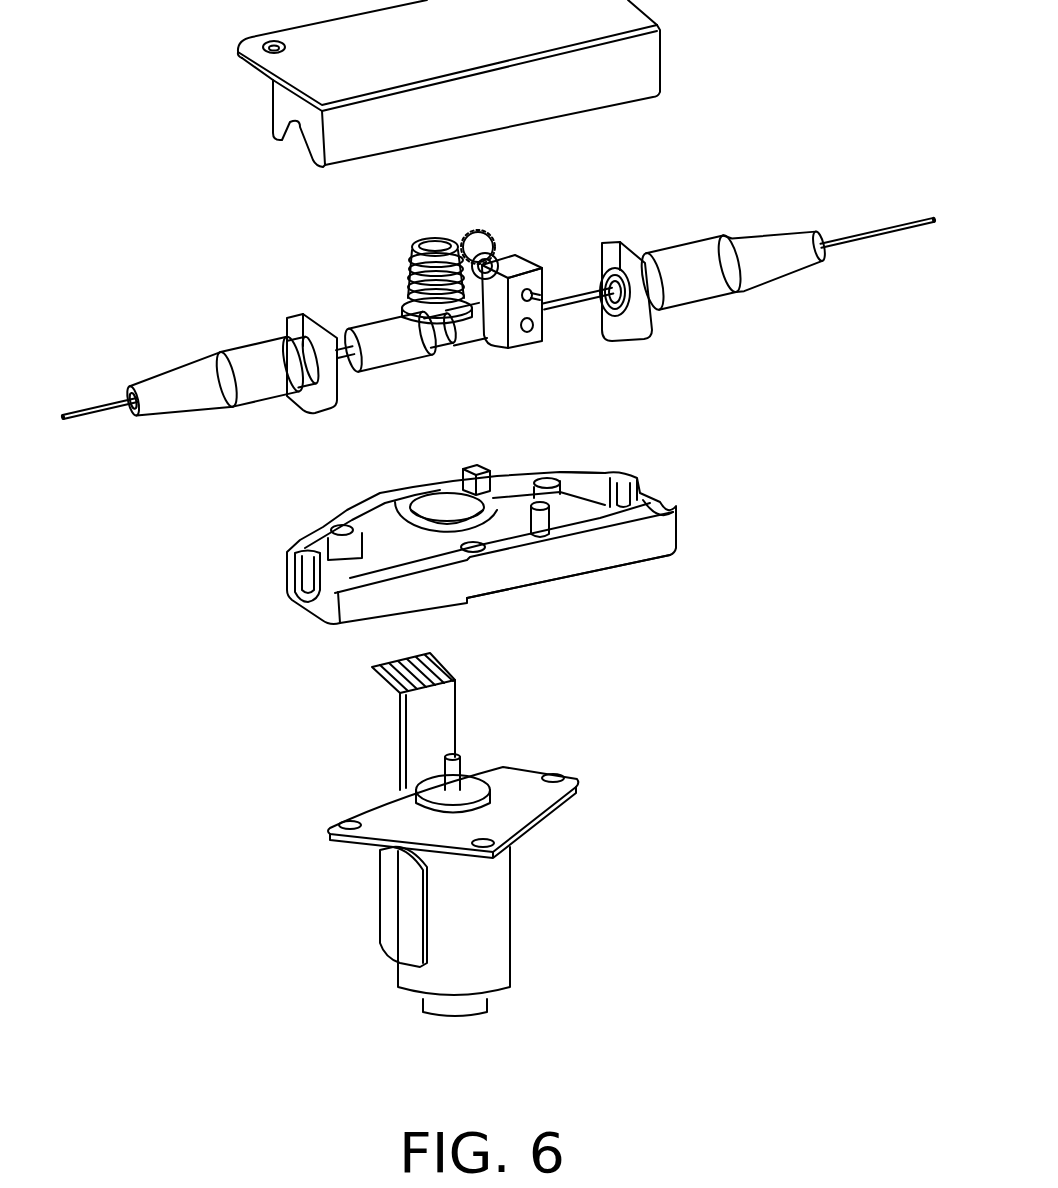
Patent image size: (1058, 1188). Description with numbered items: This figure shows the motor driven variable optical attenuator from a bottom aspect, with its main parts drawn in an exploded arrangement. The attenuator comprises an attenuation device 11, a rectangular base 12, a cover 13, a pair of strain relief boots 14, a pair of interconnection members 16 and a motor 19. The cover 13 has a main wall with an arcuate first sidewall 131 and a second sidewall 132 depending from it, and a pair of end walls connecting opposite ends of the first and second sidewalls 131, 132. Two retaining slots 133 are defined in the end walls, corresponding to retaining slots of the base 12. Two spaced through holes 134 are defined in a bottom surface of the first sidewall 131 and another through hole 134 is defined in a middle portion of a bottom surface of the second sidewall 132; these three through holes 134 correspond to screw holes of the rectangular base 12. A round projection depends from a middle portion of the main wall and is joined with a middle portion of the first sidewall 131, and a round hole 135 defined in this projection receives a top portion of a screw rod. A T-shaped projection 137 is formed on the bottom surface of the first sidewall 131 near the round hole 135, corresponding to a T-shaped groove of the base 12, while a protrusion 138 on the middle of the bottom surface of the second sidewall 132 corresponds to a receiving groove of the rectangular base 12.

The attenuation device 11 is at (505, 232).
The rectangular base 12 is at (218, 62).
The cover 13 is at (459, 522).
The strain relief boots 14 is at (196, 346).
The interconnection members 16 is at (289, 307).
The motor 19 is at (338, 869).
The first sidewall 131 is at (590, 482).
The second sidewall 132 is at (635, 515).
The retaining slots 133 is at (630, 495).
The through holes 134 is at (337, 527).
The round hole 135 is at (443, 506).
The T-shaped projection 137 is at (473, 468).
The protrusion 138 is at (573, 512).